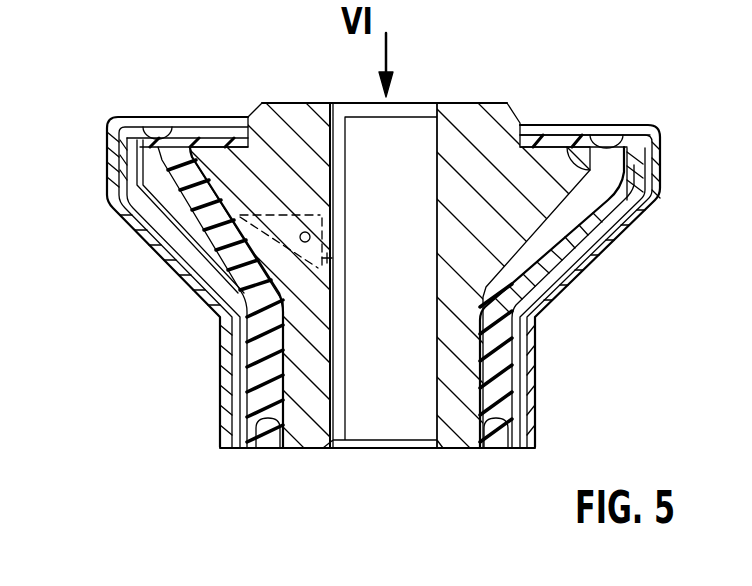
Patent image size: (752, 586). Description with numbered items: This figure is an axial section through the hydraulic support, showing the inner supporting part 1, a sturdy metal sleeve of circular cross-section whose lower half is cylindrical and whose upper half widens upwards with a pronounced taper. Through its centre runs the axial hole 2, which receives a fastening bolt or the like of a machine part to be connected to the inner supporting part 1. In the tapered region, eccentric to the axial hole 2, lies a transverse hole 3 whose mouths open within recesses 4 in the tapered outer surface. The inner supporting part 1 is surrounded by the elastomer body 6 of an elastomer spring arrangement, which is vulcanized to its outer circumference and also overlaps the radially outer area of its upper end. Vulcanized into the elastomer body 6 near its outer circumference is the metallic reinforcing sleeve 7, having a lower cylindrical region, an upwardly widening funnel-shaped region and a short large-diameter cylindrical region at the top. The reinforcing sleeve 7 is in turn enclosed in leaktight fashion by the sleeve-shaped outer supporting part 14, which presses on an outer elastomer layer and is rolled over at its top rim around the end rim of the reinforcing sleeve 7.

The inner supporting part 1 is at (480, 142).
The axial hole 2 is at (410, 125).
The transverse hole 3 is at (311, 237).
The recesses 4 is at (318, 258).
The elastomer body 6 is at (225, 268).
The reinforcing sleeve 7 is at (165, 235).
The outer supporting part 14 is at (107, 178).